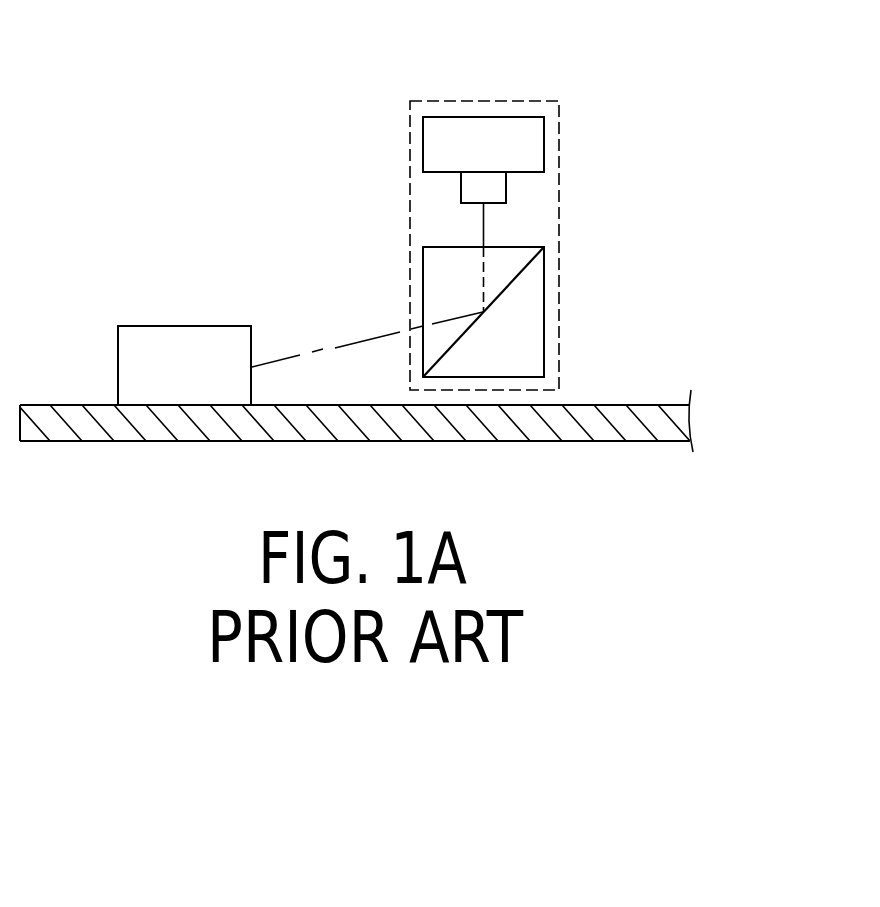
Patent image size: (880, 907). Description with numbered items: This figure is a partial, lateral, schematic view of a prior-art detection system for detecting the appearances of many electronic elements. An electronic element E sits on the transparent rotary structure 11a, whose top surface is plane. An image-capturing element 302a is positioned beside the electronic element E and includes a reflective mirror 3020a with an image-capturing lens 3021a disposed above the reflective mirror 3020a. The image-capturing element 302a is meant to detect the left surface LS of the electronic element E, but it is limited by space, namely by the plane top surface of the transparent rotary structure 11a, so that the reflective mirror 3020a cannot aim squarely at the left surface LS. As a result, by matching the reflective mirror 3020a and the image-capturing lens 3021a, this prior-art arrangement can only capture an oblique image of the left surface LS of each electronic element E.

The transparent rotary structure 11a is at (658, 441).
The electronic element E is at (124, 325).
The left surface LS is at (252, 342).
The image-capturing element 302a is at (548, 100).
The image-capturing lens 3021a is at (538, 163).
The reflective mirror 3020a is at (538, 320).